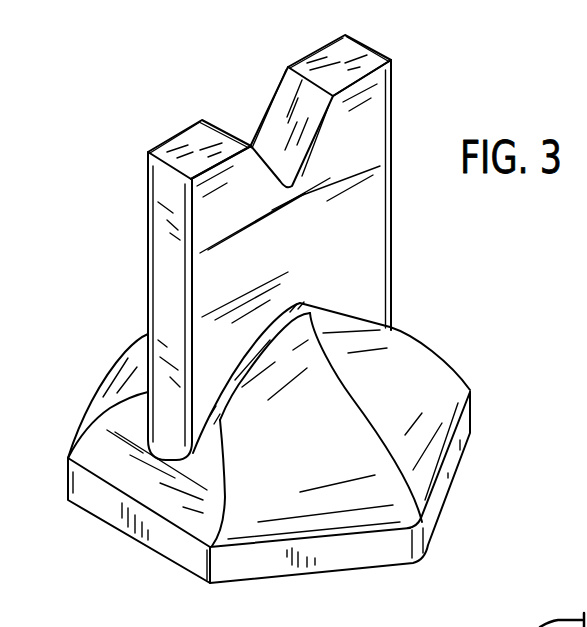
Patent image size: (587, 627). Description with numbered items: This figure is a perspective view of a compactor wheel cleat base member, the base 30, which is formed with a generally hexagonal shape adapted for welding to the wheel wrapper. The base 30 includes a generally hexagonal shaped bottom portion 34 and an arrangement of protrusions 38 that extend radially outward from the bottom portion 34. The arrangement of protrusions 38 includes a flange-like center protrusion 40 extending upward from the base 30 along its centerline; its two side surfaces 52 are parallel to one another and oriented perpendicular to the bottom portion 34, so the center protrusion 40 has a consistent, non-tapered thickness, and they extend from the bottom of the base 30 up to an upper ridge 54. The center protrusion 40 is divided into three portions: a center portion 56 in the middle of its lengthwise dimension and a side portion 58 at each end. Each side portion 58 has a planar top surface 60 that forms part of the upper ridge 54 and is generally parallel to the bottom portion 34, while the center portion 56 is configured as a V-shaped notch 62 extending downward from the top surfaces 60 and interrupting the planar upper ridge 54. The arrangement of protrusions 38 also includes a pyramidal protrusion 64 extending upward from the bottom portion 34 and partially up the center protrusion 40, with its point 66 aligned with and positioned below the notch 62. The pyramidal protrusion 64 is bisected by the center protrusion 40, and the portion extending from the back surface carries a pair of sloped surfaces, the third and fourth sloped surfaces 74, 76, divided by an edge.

The base 30 is at (465, 57).
The bottom portion 34 is at (137, 540).
The arrangement of protrusions 38 is at (408, 332).
The center protrusion 40 is at (95, 192).
The side surfaces 52 is at (158, 284).
The upper ridge 54 is at (183, 85).
The center portion 56 is at (228, 95).
The side portions 58 is at (148, 140).
The top surface 60 is at (190, 136).
The V-shaped notch 62 is at (255, 127).
The pyramidal protrusion 64 is at (468, 375).
The point 66 is at (297, 300).
The third sloped surface 74 is at (320, 457).
The fourth sloped surface 76 is at (415, 394).